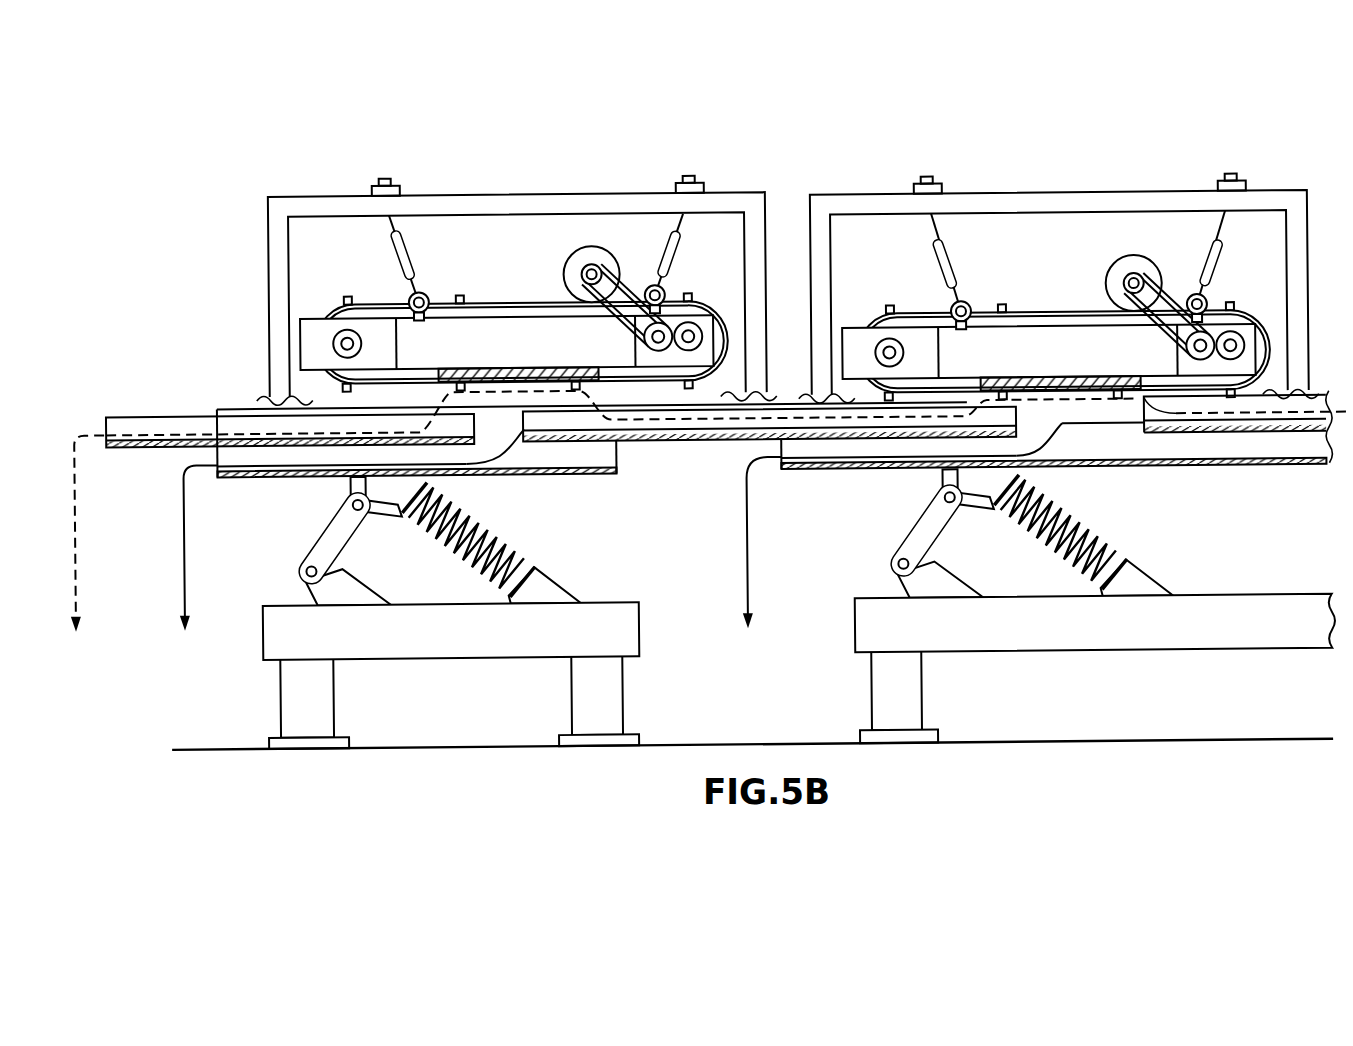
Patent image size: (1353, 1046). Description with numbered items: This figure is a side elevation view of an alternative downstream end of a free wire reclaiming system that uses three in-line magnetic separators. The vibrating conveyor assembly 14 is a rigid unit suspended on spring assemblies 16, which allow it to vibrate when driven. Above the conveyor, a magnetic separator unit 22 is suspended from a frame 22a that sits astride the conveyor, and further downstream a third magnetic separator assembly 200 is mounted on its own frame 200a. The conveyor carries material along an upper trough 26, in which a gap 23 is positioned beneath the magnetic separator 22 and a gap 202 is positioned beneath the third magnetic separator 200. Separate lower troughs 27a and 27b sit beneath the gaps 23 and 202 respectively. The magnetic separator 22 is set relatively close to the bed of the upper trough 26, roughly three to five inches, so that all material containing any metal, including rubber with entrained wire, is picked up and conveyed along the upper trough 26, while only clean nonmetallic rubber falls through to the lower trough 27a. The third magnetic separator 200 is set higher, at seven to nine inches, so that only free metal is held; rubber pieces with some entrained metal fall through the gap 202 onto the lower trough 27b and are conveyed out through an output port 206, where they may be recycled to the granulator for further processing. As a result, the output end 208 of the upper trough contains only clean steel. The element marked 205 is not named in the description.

The vibrating conveyor assembly 14 is at (1305, 459).
The spring assemblies 16 is at (524, 547).
The magnetic separator unit 22 is at (1062, 296).
The frame 22a is at (867, 196).
The gap 23 is at (1040, 433).
The upper trough 26 is at (1178, 442).
The lower trough 27a is at (1245, 471).
The lower trough 27b is at (618, 465).
The third magnetic separator assembly 200 is at (520, 289).
The frame 200a is at (317, 193).
The gap 202 is at (500, 424).
The reject discharge direction 205 is at (770, 470).
The output port 206 is at (218, 469).
The output end 208 is at (105, 430).